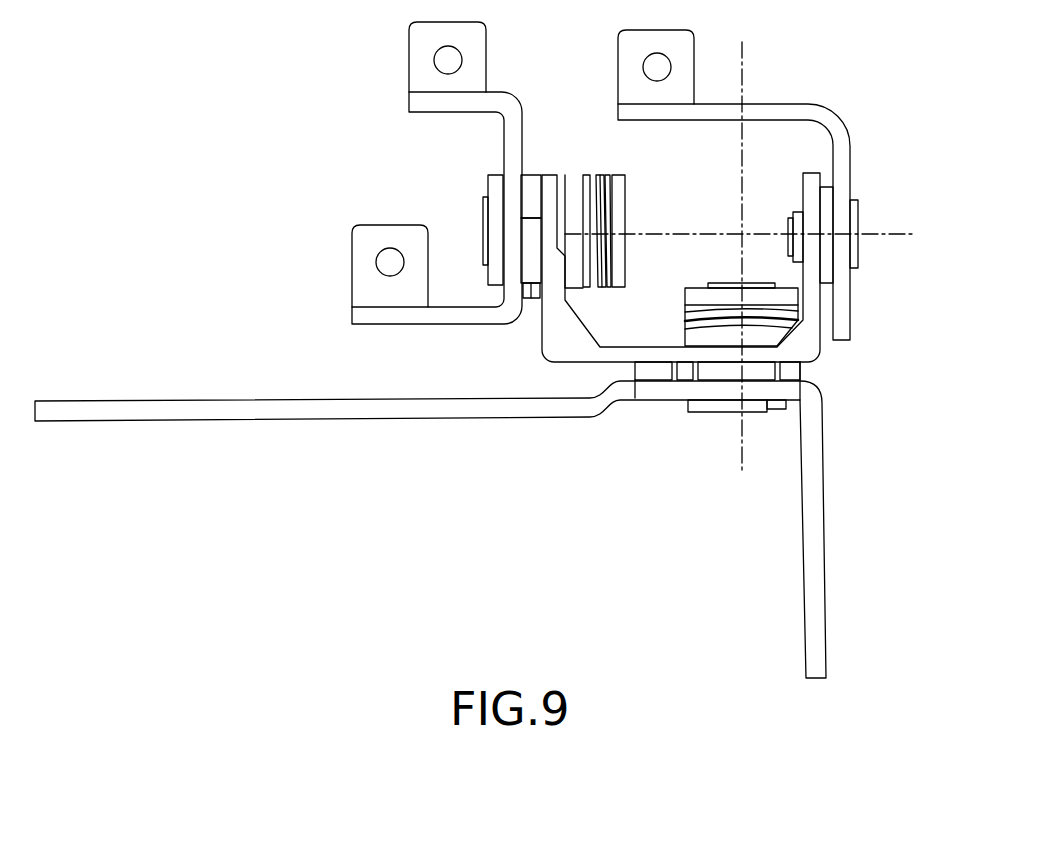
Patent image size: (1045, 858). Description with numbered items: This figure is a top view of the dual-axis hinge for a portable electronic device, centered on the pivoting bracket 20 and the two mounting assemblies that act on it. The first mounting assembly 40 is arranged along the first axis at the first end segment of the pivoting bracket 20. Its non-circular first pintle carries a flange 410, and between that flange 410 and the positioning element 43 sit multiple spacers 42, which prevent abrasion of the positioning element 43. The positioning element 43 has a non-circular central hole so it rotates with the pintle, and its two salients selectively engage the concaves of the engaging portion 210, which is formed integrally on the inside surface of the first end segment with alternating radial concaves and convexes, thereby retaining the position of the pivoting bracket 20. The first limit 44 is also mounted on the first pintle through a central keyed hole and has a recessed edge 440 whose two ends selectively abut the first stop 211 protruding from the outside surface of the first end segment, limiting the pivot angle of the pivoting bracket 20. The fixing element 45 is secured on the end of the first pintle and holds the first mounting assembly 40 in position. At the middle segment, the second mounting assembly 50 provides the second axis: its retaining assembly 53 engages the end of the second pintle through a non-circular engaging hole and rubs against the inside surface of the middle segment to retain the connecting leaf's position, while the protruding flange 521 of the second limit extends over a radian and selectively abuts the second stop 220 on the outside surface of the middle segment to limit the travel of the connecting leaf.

The engaging portion 210 is at (556, 172).
The first stop 211 is at (530, 298).
The fixing element 45 is at (500, 282).
The first limit 44 is at (533, 190).
The recessed edge 440 is at (532, 235).
The first mounting assembly 40 is at (632, 262).
The positioning element 43 is at (573, 183).
The spacers 42 is at (625, 233).
The flange 410 is at (628, 192).
The pivoting bracket 20 is at (817, 182).
The retaining assembly 53 is at (778, 272).
The second mounting assembly 50 is at (732, 432).
The protruding flange 521 is at (790, 370).
The second stop 220 is at (655, 370).